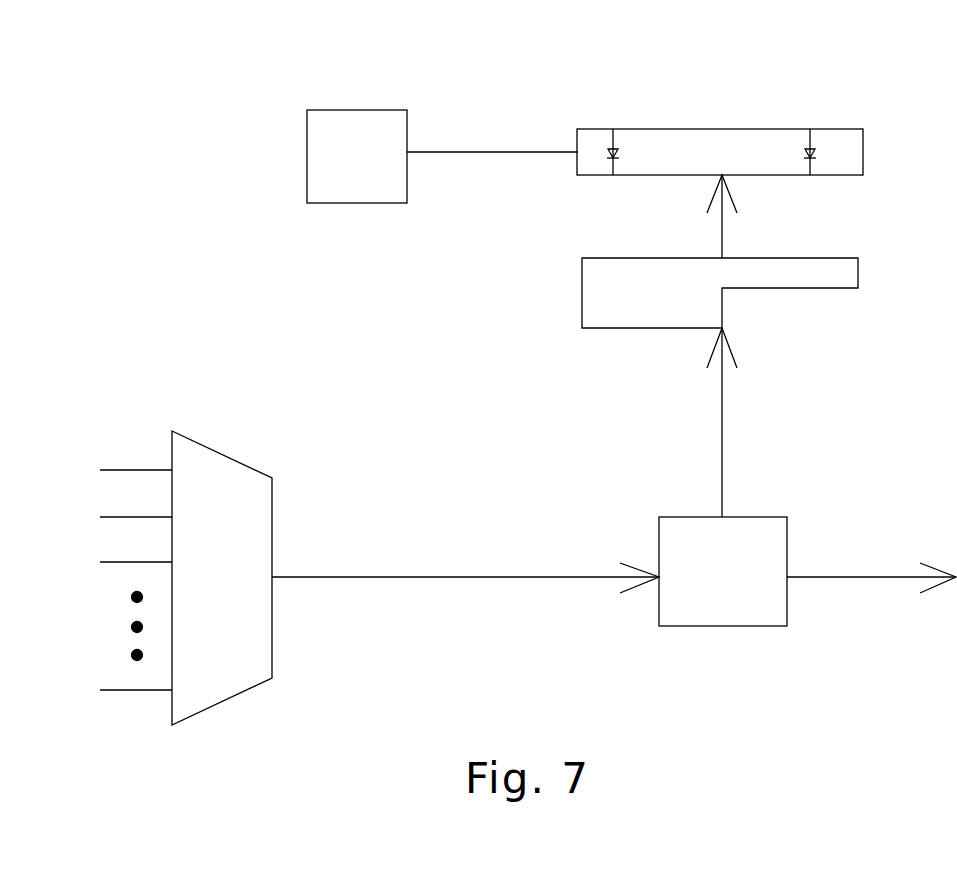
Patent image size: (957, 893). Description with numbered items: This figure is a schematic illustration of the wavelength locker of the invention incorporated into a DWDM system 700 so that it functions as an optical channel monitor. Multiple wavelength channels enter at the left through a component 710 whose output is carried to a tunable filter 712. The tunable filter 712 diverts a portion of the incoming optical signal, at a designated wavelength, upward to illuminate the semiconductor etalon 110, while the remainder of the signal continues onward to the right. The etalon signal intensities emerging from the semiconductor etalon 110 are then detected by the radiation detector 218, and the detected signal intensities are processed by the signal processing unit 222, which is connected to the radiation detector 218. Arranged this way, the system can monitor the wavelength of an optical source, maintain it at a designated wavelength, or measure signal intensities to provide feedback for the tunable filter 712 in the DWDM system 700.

The DWDM system 700 is at (235, 245).
The wavelength multiplexer 710 is at (207, 442).
The tunable filter 712 is at (787, 540).
The semiconductor etalon 110 is at (859, 268).
The radiation detector 218 is at (748, 129).
The signal processing unit 222 is at (347, 110).